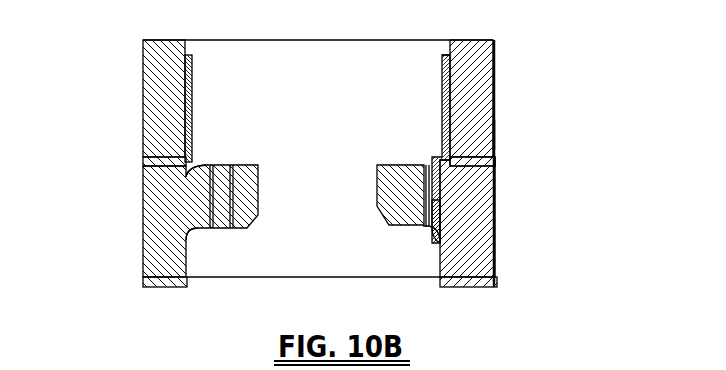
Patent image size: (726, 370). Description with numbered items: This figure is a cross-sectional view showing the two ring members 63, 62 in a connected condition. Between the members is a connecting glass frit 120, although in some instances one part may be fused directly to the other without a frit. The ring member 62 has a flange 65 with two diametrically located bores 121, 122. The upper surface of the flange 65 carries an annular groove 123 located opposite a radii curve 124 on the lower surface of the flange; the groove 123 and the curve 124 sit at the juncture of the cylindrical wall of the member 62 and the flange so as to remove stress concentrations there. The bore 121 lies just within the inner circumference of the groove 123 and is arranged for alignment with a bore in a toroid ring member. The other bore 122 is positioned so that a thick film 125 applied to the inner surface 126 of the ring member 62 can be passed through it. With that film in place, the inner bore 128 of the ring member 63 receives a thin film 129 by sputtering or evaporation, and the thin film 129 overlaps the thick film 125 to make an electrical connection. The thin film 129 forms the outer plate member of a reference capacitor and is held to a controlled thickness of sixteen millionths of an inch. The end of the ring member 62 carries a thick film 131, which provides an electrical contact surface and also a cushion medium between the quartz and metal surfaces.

The thin film 129 is at (441, 68).
The ring member 63 is at (494, 80).
The connecting glass frit 120 is at (495, 137).
The ring member 62 is at (496, 238).
The inner bore 128 is at (444, 107).
The bore 122 is at (430, 158).
The annular groove 123 is at (198, 165).
The bore 121 is at (218, 165).
The flange 65 is at (248, 188).
The radii curve 124 is at (193, 228).
The thick film 125 is at (440, 240).
The inner surface 126 is at (442, 262).
The thick film 131 is at (163, 288).